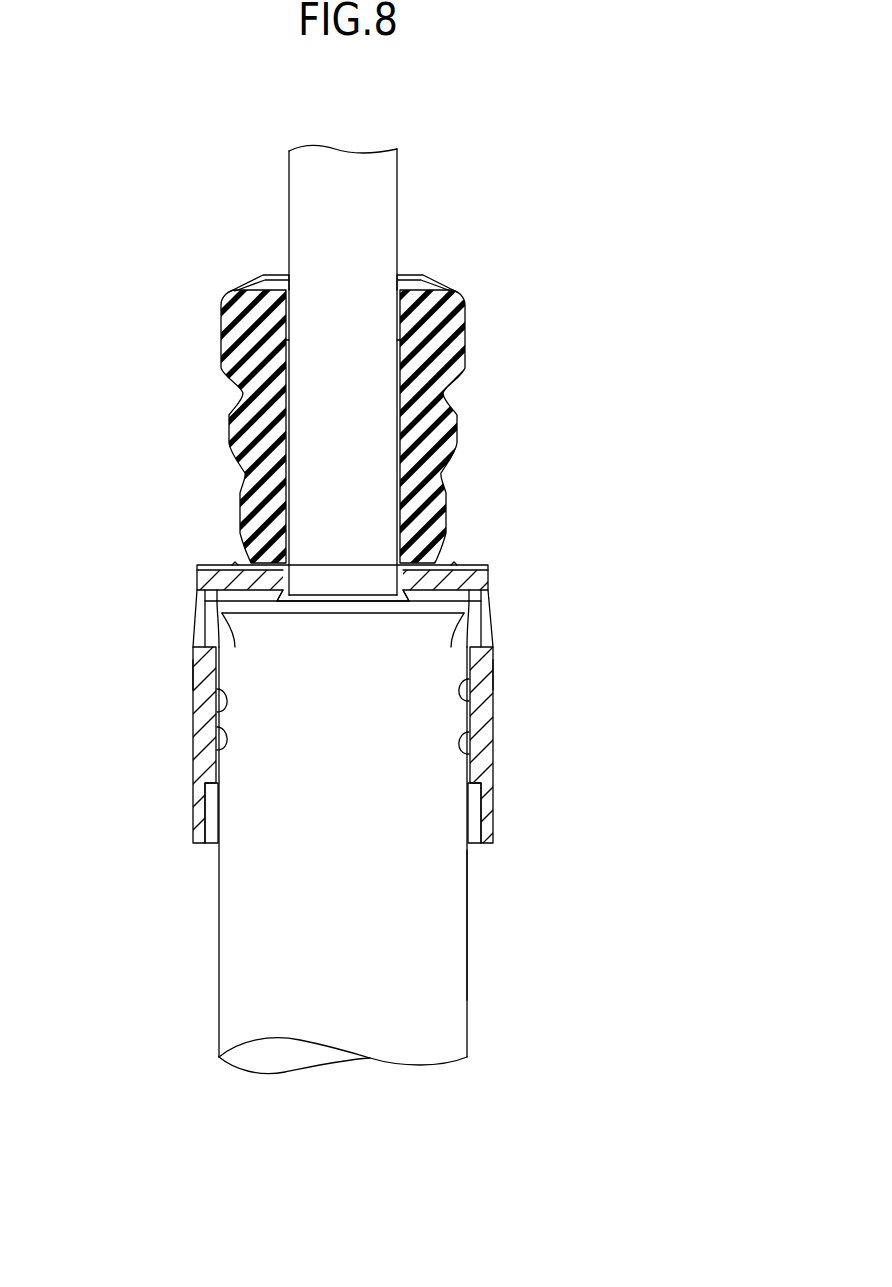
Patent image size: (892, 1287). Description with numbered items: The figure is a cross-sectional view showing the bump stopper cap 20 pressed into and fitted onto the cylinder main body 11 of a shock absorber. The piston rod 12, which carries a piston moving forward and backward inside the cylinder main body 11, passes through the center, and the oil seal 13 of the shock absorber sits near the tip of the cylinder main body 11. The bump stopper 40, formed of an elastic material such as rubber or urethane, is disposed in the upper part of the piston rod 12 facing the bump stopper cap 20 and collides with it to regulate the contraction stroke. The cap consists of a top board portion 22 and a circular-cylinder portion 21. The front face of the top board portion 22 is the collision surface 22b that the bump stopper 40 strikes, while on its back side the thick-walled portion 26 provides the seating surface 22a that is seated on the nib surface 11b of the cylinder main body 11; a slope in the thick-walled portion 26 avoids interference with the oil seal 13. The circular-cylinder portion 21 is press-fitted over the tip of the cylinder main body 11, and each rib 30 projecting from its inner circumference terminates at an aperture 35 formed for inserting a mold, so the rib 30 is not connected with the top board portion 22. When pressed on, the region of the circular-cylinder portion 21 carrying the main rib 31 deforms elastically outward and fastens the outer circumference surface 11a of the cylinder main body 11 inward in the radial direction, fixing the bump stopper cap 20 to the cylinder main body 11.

The cylinder main body 11 is at (467, 1025).
The outer circumference surface 11a is at (467, 963).
The nib surface 11b is at (232, 597).
The piston rod 12 is at (397, 190).
The oil seal 13 is at (357, 594).
The bump stopper cap 20 is at (585, 569).
The circular-cylinder portion 21 is at (493, 718).
The top board portion 22 is at (488, 572).
The seating surface 22a is at (196, 673).
The collision surface 22b is at (436, 598).
The thick-walled portion 26 is at (234, 567).
The rib 30 is at (226, 745).
The main rib 31 is at (226, 708).
The aperture 35 is at (199, 613).
The bump stopper 40 is at (465, 333).